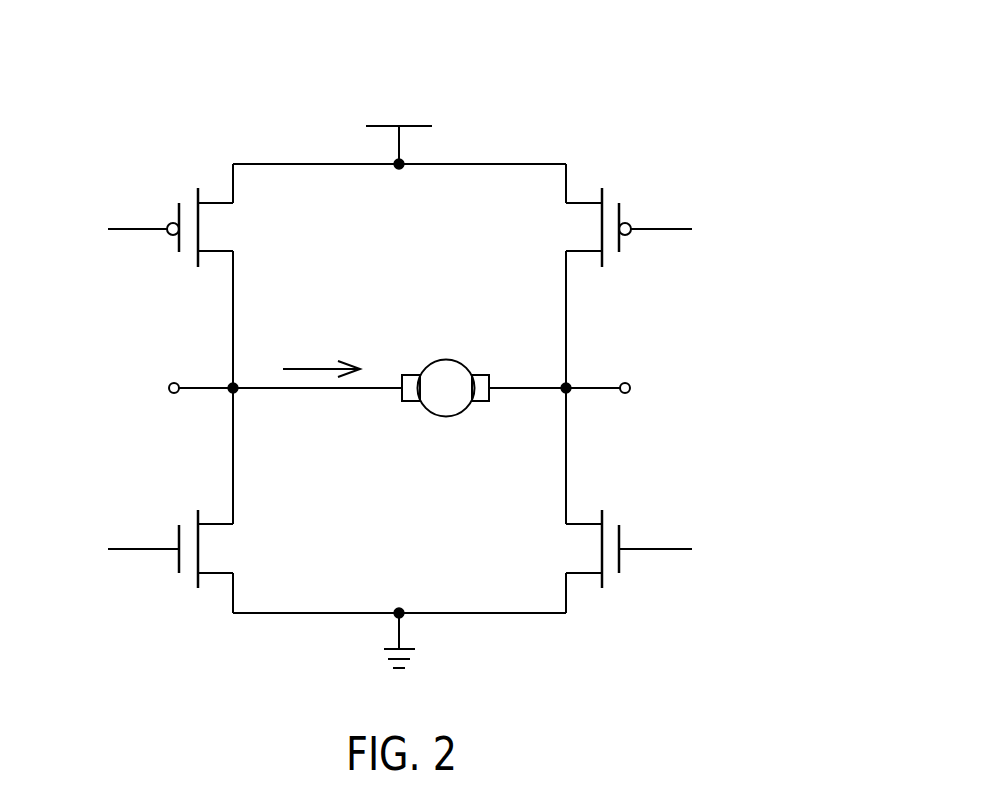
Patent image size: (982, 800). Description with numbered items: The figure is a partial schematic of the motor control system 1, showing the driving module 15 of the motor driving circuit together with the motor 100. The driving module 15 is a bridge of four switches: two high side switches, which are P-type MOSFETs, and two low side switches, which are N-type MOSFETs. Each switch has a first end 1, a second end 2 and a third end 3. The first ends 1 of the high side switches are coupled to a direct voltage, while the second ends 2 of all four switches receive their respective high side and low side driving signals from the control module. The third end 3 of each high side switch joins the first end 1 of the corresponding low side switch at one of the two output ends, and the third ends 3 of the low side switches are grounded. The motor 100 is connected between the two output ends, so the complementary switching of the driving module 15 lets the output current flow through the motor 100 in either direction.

The driving module 15 is at (747, 48).
The motor 100 is at (446, 359).
The motor control system 1 is at (400, 351).
The second terminal (gate) of transistor 2 is at (402, 376).
The third terminal of transistor 3 is at (400, 425).